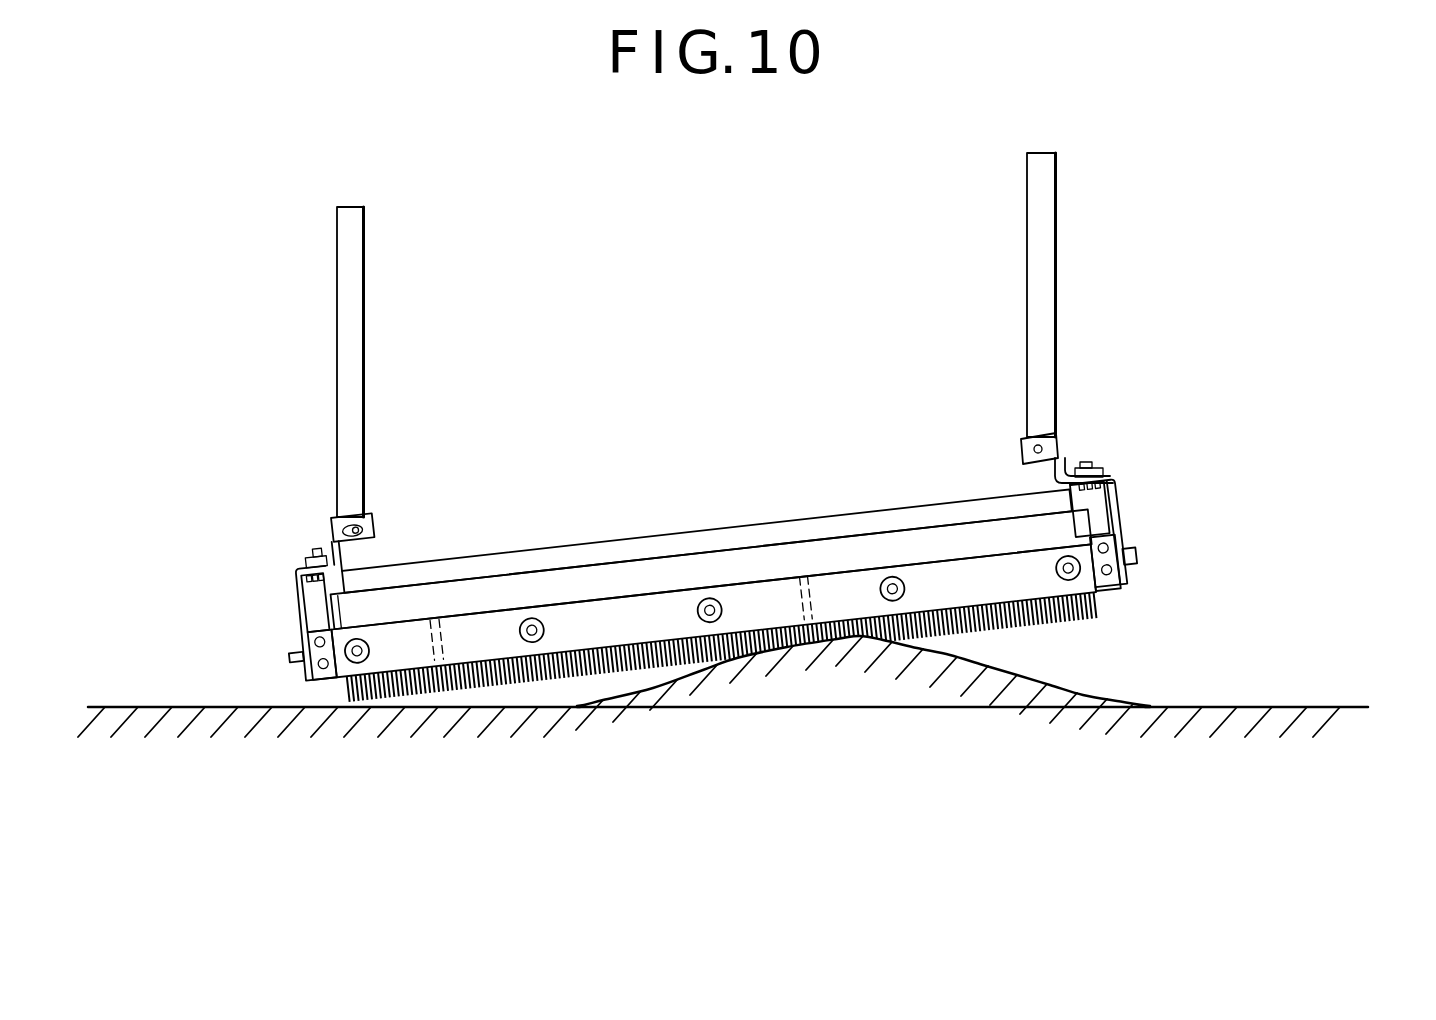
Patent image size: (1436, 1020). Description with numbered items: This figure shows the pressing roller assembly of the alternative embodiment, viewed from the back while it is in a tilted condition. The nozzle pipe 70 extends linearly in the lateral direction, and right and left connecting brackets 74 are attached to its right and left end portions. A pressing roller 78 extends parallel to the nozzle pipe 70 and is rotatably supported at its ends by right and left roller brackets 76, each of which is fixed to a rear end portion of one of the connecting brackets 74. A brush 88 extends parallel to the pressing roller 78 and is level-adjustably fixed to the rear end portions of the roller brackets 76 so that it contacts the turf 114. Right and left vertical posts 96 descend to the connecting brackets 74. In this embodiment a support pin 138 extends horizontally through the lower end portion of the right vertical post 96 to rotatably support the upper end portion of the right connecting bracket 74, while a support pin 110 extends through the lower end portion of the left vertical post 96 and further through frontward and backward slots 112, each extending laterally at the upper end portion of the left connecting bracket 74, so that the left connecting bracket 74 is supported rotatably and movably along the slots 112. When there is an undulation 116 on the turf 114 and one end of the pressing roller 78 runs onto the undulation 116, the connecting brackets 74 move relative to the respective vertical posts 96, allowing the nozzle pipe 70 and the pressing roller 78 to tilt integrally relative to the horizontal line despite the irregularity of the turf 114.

The nozzle pipe 70 is at (757, 541).
The connecting bracket 74 is at (337, 543).
The roller bracket 76 is at (297, 614).
The pressing roller 78 is at (600, 583).
The brush 88 is at (593, 668).
The vertical post 96 is at (345, 253).
The support pin 110 is at (357, 520).
The slot 112 is at (362, 537).
The turf 114 is at (1343, 703).
The undulation 116 is at (1035, 672).
The support pin 138 is at (1040, 440).